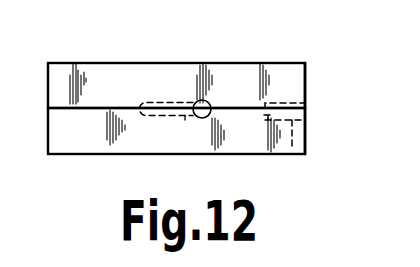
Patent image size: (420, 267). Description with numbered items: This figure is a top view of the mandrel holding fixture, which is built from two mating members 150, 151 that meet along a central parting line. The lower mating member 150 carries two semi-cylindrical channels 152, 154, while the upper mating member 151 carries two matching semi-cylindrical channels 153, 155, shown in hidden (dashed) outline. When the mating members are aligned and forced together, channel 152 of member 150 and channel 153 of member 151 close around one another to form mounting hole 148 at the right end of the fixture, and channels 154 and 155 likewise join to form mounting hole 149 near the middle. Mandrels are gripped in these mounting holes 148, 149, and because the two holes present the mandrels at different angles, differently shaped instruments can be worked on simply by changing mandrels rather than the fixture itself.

The mounting hole 148 is at (305, 108).
The mounting hole 149 is at (206, 105).
The mating member 150 is at (103, 143).
The mating member 151 is at (105, 75).
The semi-cylindrical channel 152 is at (288, 150).
The semi-cylindrical channel 153 is at (287, 100).
The semi-cylindrical channel 154 is at (189, 118).
The semi-cylindrical channel 155 is at (160, 98).